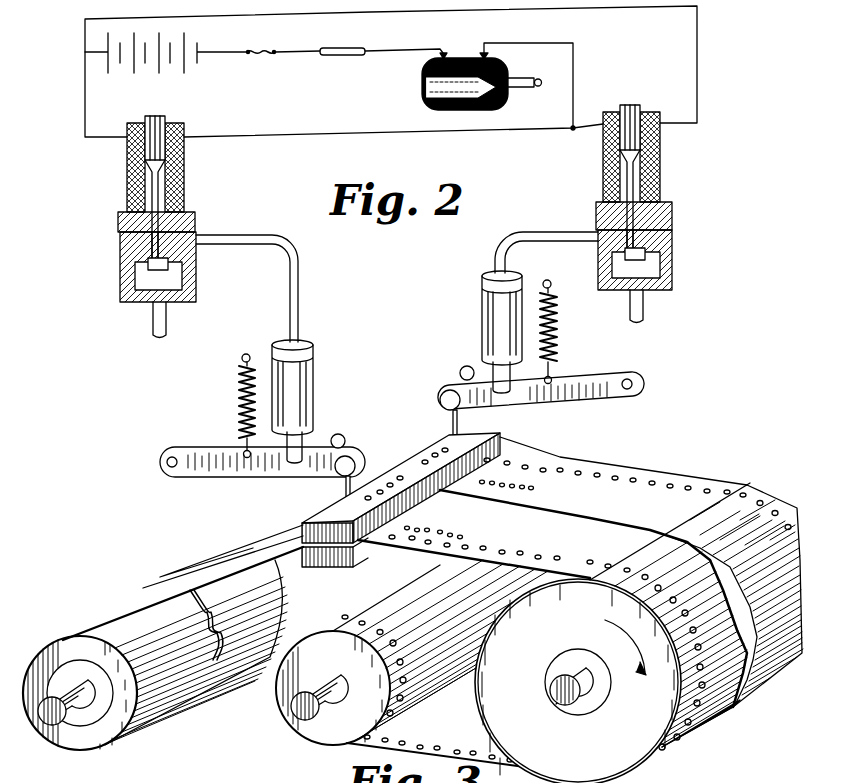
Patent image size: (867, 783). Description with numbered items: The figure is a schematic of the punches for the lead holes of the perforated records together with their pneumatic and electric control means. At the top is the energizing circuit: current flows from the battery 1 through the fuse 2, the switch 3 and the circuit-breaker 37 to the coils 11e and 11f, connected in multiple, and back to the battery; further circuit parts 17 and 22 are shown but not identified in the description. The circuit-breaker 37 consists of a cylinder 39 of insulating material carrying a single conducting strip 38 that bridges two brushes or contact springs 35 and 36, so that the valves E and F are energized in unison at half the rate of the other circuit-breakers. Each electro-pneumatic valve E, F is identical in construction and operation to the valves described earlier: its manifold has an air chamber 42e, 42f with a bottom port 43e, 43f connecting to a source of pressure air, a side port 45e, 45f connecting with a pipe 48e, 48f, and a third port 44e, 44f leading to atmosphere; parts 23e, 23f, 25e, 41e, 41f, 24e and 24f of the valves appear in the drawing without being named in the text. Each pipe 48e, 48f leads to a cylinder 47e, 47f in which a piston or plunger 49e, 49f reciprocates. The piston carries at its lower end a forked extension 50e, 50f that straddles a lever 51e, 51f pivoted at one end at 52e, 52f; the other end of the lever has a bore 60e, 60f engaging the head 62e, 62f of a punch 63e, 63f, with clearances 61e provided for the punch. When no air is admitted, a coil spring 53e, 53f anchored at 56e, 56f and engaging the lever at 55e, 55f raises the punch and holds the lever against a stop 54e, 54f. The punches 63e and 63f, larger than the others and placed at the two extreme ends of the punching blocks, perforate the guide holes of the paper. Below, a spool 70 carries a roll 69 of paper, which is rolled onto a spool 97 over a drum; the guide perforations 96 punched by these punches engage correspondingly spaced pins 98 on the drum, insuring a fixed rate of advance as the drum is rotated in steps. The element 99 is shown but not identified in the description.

The battery 1 is at (190, 68).
The fuse 2 is at (265, 58).
The switch 3 is at (346, 58).
The circuit 17 is at (424, 130).
The circuit line 22 is at (383, 13).
The brush or contact spring 35 is at (450, 52).
The brush or contact spring 36 is at (476, 52).
The circuit-breaker 37 is at (514, 82).
The conducting strip 38 is at (428, 88).
The cylinder of insulating material 39 is at (508, 97).
The electro-pneumatic valve E is at (157, 178).
The electro-pneumatic valve F is at (657, 167).
The coil 11e is at (184, 165).
The coil 11f is at (662, 150).
The core 23e is at (155, 116).
The core 23f is at (630, 106).
The magnet housing 25e is at (91, 184).
The port 44e is at (130, 225).
The port 44f is at (672, 212).
The valve member 41e is at (145, 262).
The valve member 41f is at (624, 256).
The valve stem 24e is at (150, 283).
The valve stem 24f is at (652, 250).
The air chamber 42e is at (200, 281).
The air chamber 42f is at (672, 270).
The port 43e is at (168, 329).
The port 43f is at (645, 312).
The port 45e is at (222, 237).
The port 45f is at (586, 234).
The pipe 48e is at (300, 270).
The pipe 48f is at (518, 236).
The piston 49e is at (313, 352).
The piston 49f is at (482, 300).
The cylinder 47e is at (314, 392).
The cylinder 47f is at (482, 328).
The forked extension 50e is at (292, 462).
The forked extension 50f is at (508, 395).
The coil spring 53e is at (240, 398).
The coil spring 53f is at (560, 327).
The spring anchor 56e is at (242, 357).
The spring anchor 56f is at (554, 285).
The spring engagement point 55e is at (245, 450).
The spring engagement point 55f is at (550, 378).
The punch lever 51e is at (222, 478).
The punch lever 51f is at (598, 400).
The pivot 52e is at (168, 466).
The pivot 52f is at (640, 382).
The stop 54e is at (346, 434).
The stop 54f is at (466, 366).
The bore 60e is at (355, 458).
The bore 60f is at (444, 392).
The punch head 62e is at (340, 474).
The punch head 62f is at (444, 404).
The clearance 61e is at (300, 510).
The punch 63e is at (352, 478).
The punch 63f is at (458, 420).
The perforated strip 99 is at (408, 537).
The roll of paper 69 is at (604, 468).
The guide perforations 96 is at (656, 482).
The pins 98 is at (764, 494).
The spool 97 is at (316, 732).
The spool 70 is at (100, 745).